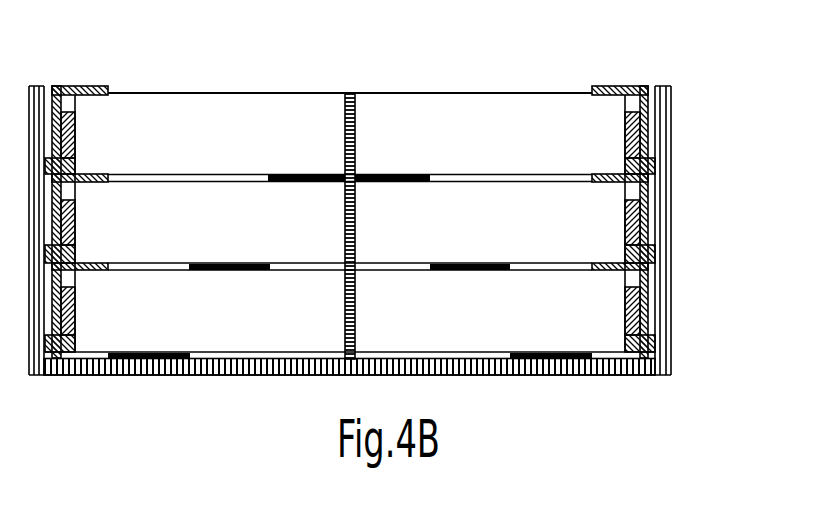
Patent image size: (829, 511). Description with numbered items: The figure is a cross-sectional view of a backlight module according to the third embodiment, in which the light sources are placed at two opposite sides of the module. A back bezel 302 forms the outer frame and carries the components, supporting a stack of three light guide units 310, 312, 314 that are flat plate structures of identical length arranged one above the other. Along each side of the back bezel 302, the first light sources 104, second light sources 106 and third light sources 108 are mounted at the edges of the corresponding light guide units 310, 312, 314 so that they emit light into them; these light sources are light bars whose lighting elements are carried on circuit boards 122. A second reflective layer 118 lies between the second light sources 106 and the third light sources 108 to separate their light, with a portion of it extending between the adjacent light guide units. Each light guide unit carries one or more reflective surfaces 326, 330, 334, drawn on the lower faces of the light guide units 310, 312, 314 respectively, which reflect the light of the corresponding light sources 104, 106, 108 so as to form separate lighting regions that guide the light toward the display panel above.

The back bezel 302 is at (632, 365).
The second light sources 106 is at (643, 217).
The third light sources 108 is at (638, 127).
The first light sources 104 is at (640, 300).
The second reflective layer 118 is at (642, 177).
The circuit boards 122 is at (643, 338).
The third light guide units 314 is at (216, 154).
The second light guide units 312 is at (216, 244).
The first light guide units 310 is at (216, 334).
The reflective surfaces 334 is at (393, 175).
The reflective surfaces 330 is at (472, 263).
The reflective surfaces 326 is at (543, 352).